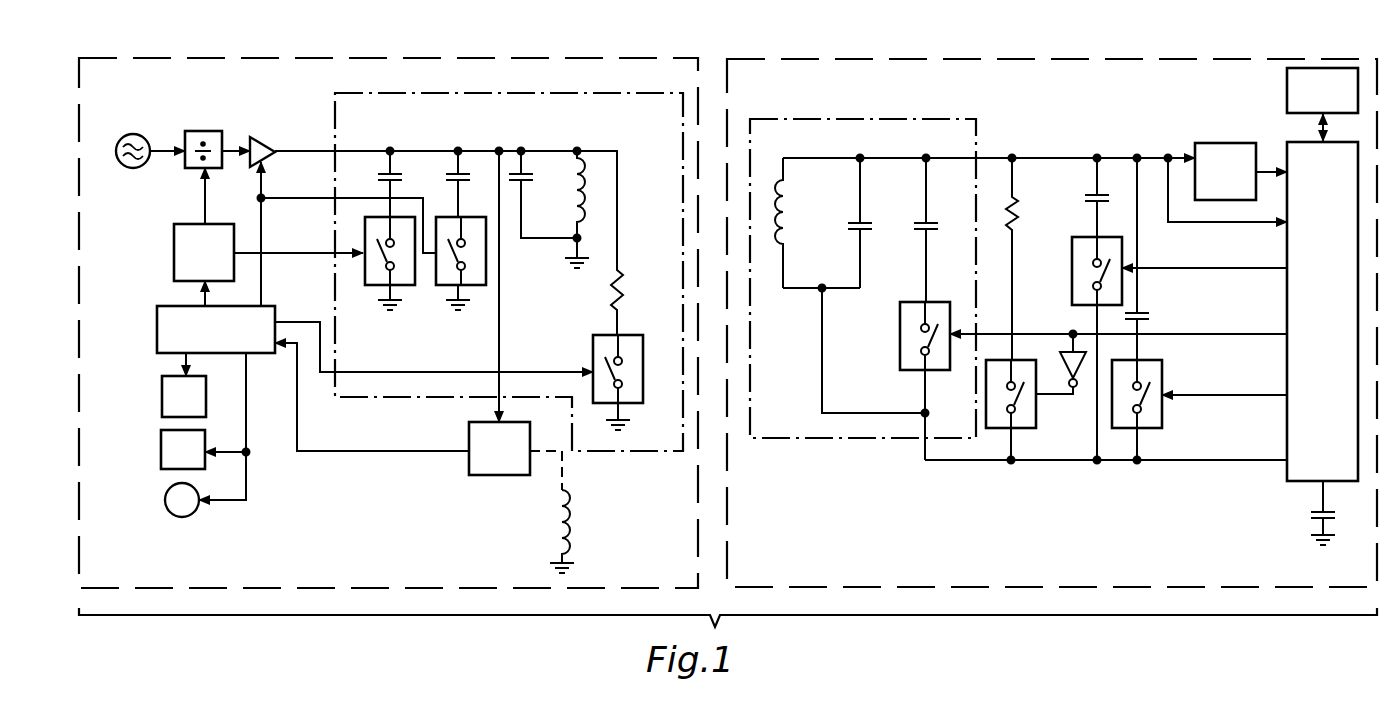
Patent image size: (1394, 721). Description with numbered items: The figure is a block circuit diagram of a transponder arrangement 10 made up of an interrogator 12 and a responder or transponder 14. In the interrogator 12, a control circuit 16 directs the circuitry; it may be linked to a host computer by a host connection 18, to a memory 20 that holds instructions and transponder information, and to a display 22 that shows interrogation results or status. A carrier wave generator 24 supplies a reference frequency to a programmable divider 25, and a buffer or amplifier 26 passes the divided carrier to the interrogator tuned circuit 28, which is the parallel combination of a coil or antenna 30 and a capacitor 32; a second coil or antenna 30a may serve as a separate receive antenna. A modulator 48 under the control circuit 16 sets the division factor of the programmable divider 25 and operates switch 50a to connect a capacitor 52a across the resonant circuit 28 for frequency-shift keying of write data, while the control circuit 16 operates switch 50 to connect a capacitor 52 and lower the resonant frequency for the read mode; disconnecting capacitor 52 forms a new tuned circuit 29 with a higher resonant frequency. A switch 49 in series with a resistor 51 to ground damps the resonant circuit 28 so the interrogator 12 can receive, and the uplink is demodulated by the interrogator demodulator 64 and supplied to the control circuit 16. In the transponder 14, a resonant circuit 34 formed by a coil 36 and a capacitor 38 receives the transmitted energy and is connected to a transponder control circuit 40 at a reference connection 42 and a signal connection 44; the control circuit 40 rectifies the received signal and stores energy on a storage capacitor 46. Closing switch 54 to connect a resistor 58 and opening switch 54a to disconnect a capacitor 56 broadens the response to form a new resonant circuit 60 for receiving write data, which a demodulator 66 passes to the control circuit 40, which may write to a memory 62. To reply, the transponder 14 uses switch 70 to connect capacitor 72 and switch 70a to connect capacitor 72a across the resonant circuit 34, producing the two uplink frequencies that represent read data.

The transponder arrangement 10 is at (394, 40).
The interrogator 12 is at (136, 105).
The transponder 14 is at (791, 103).
The control circuit 16 is at (234, 349).
The host connection 18 is at (166, 496).
The memory 20 is at (162, 397).
The display 22 is at (161, 440).
The carrier wave generator 24 is at (148, 137).
The programmable divider 25 is at (212, 130).
The amplifier 26 is at (263, 140).
The resonant circuit 28 is at (562, 232).
The new tuned circuit 29 is at (650, 130).
The coil 30 is at (590, 210).
The second coil 30a is at (570, 520).
The capacitor 32 is at (530, 172).
The transponder resonant circuit 34 is at (856, 336).
The coil 36 is at (788, 215).
The capacitor 38 is at (878, 235).
The transponder control circuit 40 is at (1341, 318).
The reference connection 42 is at (1163, 461).
The signal connection 44 is at (1120, 158).
The storage capacitor 46 is at (1307, 516).
The modulator 48 is at (222, 272).
The switch 49 is at (593, 354).
The switch 50 is at (473, 222).
The switch 50a is at (363, 222).
The resistor 51 is at (627, 285).
The capacitor 52 is at (440, 170).
The capacitor 52a is at (372, 172).
The switch 54 is at (1037, 426).
The switch 54a is at (899, 342).
The capacitor 56 is at (918, 220).
The resistor 58 is at (1018, 206).
The new resonant circuit 60 is at (803, 396).
The memory 62 is at (1341, 108).
The interrogator demodulator 64 is at (518, 467).
The demodulator 66 is at (1244, 189).
The switch 70 is at (1072, 265).
The switch 70a is at (1162, 366).
The capacitor 72 is at (1082, 200).
The capacitor 72a is at (1160, 316).